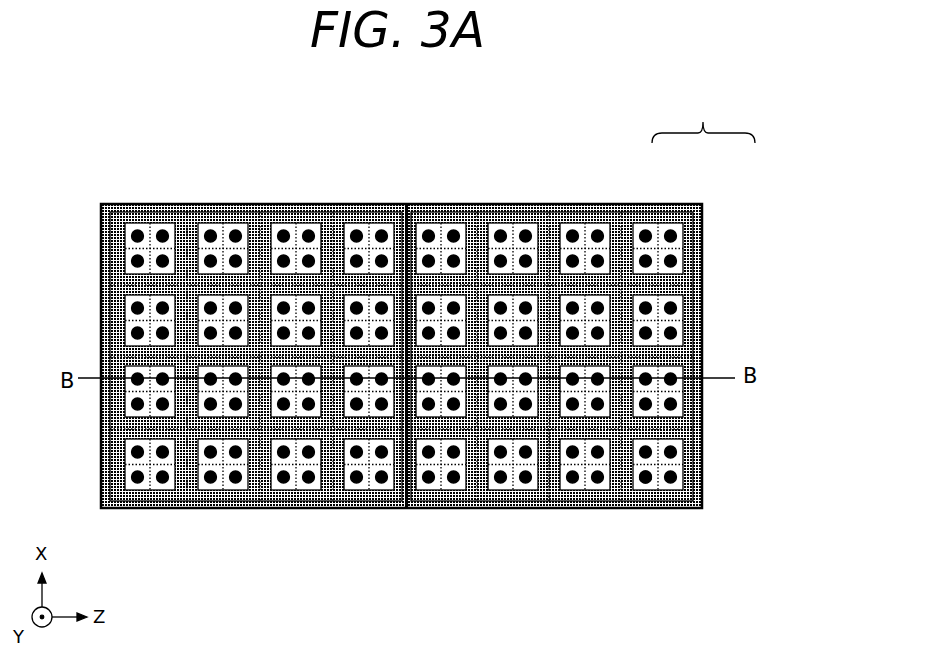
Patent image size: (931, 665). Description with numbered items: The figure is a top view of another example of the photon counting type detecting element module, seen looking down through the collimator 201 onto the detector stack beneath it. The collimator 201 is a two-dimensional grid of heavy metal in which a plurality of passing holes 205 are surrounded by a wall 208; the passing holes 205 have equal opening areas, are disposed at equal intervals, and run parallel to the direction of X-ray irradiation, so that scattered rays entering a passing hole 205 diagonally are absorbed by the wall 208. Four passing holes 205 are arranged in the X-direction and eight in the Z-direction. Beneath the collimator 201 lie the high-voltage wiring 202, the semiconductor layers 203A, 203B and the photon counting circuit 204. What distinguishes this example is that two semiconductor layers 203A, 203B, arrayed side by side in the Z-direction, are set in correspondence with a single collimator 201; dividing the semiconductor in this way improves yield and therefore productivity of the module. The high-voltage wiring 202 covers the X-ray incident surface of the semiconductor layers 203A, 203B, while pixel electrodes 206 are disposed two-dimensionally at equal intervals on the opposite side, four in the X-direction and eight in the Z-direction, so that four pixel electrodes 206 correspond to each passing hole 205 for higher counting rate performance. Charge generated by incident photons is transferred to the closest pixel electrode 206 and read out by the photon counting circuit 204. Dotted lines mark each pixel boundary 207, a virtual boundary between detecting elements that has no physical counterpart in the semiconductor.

The collimator 201 is at (703, 118).
The high-voltage wiring 202 is at (698, 263).
The semiconductor layer 203A is at (110, 327).
The semiconductor layer 203B is at (609, 356).
The photon counting circuit 204 is at (598, 356).
The passing hole 205 is at (648, 217).
The pixel electrode 206 is at (648, 487).
The pixel boundary 207 is at (552, 487).
The wall 208 is at (687, 218).